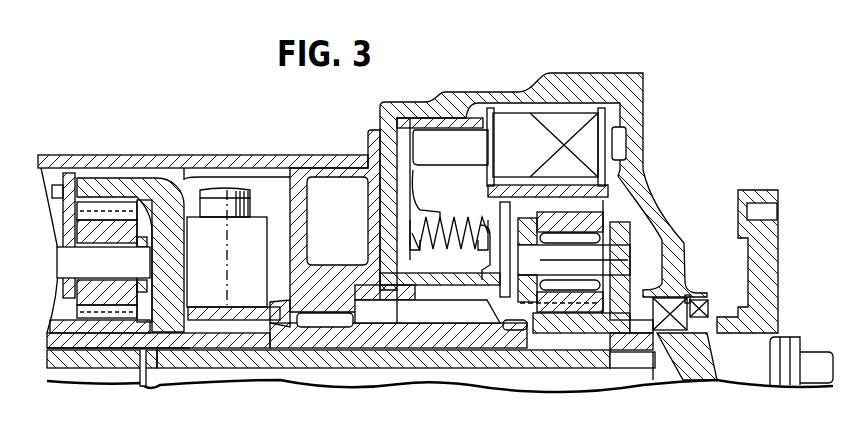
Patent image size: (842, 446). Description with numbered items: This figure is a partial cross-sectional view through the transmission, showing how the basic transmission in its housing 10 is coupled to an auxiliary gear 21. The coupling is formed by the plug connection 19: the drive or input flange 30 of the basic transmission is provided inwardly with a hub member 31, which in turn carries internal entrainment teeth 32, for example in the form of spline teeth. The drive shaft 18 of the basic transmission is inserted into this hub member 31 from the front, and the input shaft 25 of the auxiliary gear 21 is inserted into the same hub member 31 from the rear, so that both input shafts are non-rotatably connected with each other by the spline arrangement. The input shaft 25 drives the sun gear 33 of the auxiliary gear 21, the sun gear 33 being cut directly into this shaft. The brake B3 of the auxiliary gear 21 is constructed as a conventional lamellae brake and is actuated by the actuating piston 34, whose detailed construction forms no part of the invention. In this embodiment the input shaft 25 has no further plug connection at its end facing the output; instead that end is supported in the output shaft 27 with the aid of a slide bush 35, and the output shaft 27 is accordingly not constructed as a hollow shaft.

The housing 10 is at (160, 157).
The drive shaft 18 is at (62, 358).
The plug connection 19 is at (133, 398).
The auxiliary gear 21 is at (616, 222).
The input shaft 25 is at (247, 360).
The output shaft 27 is at (740, 375).
The drive flange 30 is at (158, 262).
The hub member 31 is at (112, 343).
The entrainment teeth 32 is at (145, 372).
The sun gear 33 is at (590, 362).
The actuating piston 34 is at (448, 158).
The slide bush 35 is at (628, 360).
The brake B3 is at (546, 147).